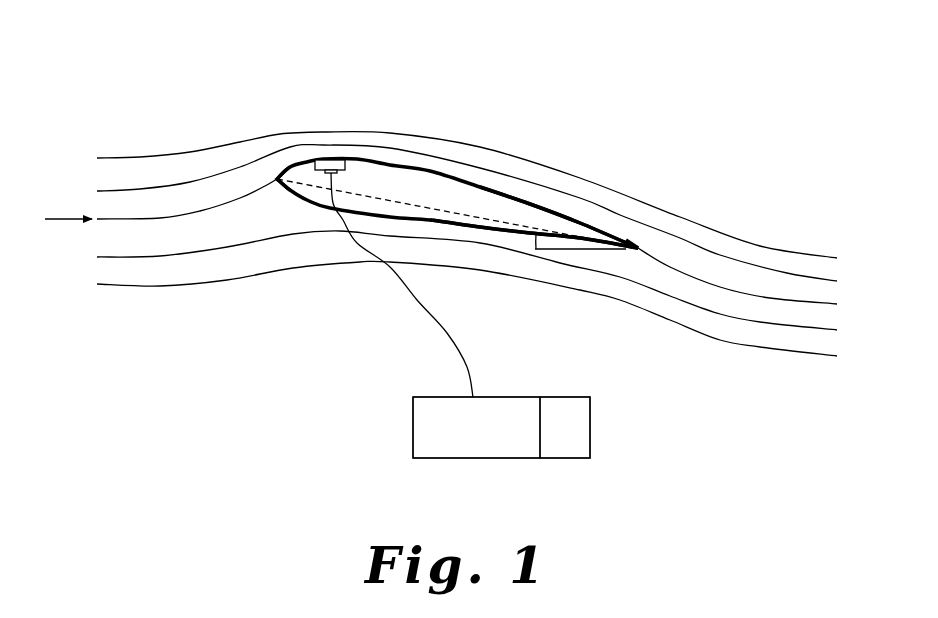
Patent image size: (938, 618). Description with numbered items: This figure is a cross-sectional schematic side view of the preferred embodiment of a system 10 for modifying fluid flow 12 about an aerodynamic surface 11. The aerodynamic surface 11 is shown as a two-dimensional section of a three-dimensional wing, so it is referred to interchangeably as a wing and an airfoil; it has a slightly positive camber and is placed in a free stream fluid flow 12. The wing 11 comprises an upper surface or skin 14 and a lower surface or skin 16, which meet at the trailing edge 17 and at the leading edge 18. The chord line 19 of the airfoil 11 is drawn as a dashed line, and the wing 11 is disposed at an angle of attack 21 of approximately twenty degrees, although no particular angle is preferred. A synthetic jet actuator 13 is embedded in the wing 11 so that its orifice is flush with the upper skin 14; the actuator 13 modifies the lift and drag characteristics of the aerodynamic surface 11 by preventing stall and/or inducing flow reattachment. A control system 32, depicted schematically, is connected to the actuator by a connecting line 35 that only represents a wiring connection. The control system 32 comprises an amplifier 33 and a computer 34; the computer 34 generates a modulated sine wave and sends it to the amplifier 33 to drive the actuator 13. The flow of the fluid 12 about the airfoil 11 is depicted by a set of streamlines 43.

The system 10 is at (185, 95).
The aerodynamic surface 11 is at (428, 168).
The fluid flow 12 is at (68, 206).
The synthetic jet actuator 13 is at (357, 177).
The upper surface 14 is at (590, 225).
The lower surface 16 is at (508, 232).
The trailing edge 17 is at (640, 249).
The leading edge 18 is at (277, 180).
The chord line 19 is at (463, 213).
The angle of attack 21 is at (533, 227).
The control system 32 is at (395, 445).
The amplifier 33 is at (493, 440).
The computer 34 is at (578, 440).
The connecting line 35 is at (415, 302).
The streamlines 43 is at (467, 243).